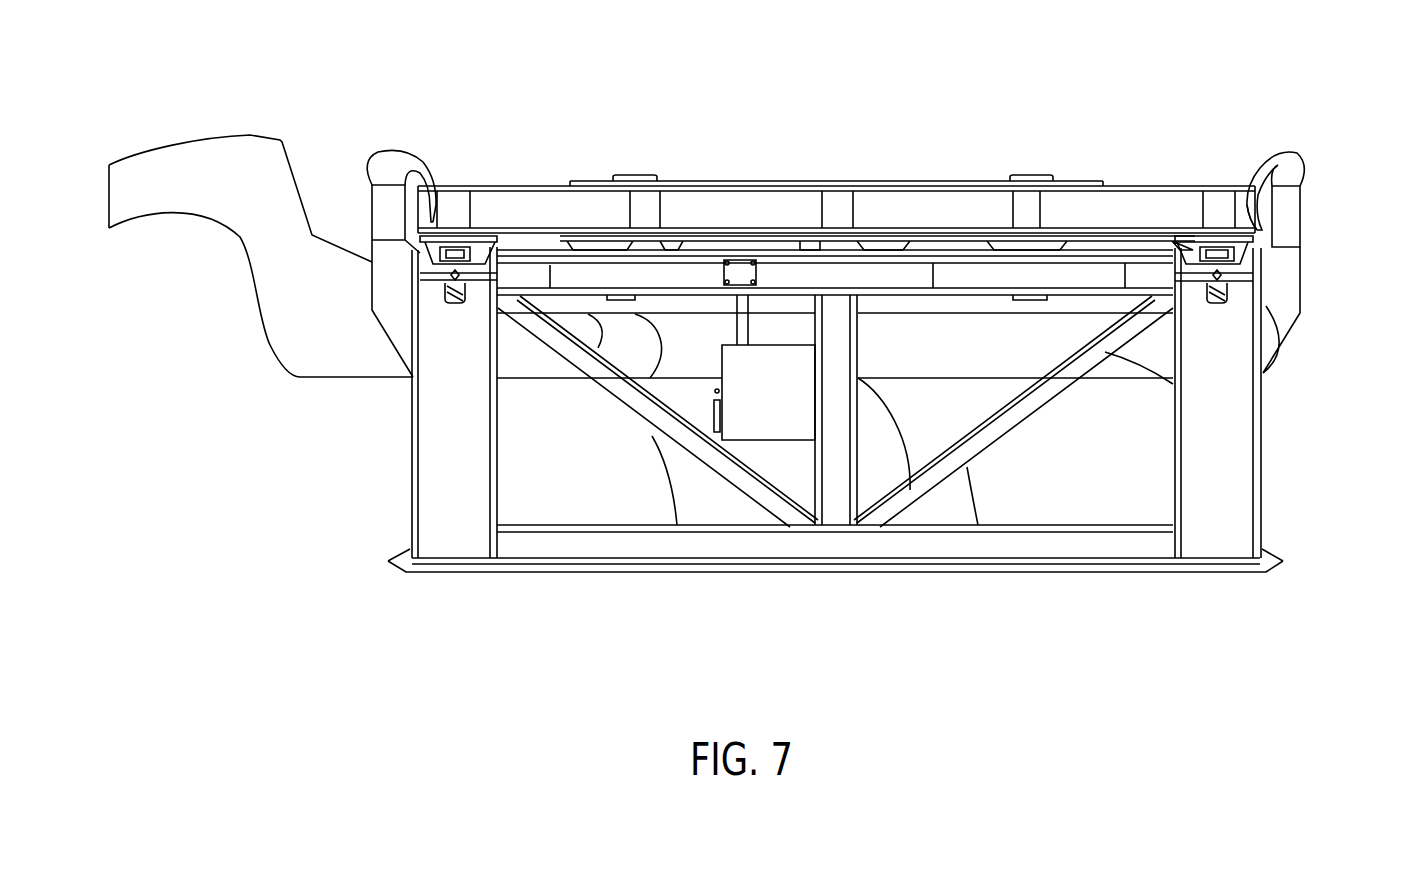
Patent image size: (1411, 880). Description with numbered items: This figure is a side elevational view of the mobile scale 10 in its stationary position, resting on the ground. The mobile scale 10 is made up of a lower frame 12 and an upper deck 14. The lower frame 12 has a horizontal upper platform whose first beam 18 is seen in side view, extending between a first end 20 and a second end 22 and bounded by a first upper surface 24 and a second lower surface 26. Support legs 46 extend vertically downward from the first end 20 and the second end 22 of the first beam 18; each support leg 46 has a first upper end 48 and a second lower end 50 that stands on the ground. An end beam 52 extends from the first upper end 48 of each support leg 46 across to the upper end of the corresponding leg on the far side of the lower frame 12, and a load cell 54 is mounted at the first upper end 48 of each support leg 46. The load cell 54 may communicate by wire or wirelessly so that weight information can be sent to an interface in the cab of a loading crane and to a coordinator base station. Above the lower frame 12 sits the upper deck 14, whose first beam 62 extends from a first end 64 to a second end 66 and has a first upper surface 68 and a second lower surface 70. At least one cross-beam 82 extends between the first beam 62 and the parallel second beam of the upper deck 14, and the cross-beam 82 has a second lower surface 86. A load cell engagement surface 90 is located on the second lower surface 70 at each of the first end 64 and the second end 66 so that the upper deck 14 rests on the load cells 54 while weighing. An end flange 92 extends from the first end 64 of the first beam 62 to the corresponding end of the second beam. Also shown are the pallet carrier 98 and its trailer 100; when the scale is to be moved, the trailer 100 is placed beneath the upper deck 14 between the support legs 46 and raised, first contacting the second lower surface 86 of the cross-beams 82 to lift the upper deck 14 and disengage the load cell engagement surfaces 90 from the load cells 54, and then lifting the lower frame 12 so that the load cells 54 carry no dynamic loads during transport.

The mobile scale 10 is at (1176, 89).
The lower frame 12 is at (840, 439).
The upper deck 14 is at (1203, 192).
The first beam 18 is at (902, 283).
The first end 20 is at (447, 290).
The second end 22 is at (1230, 290).
The first upper surface 24 is at (1109, 250).
The second lower surface 26 is at (952, 296).
The support leg 46 is at (437, 473).
The first upper end 48 is at (455, 278).
The second lower end 50 is at (440, 573).
The end beam 52 is at (385, 203).
The load cell 54 is at (450, 253).
The first beam 62 is at (902, 213).
The first end 64 is at (433, 205).
The second end 66 is at (1263, 207).
The first upper surface 68 is at (725, 183).
The second lower surface 70 is at (788, 265).
The cross-beam 82 is at (640, 296).
The second lower surface 86 is at (640, 308).
The load cell engagement surface 90 is at (481, 236).
The end flange 92 is at (397, 162).
The pallet carrier 98 is at (220, 207).
The trailer 100 is at (572, 378).